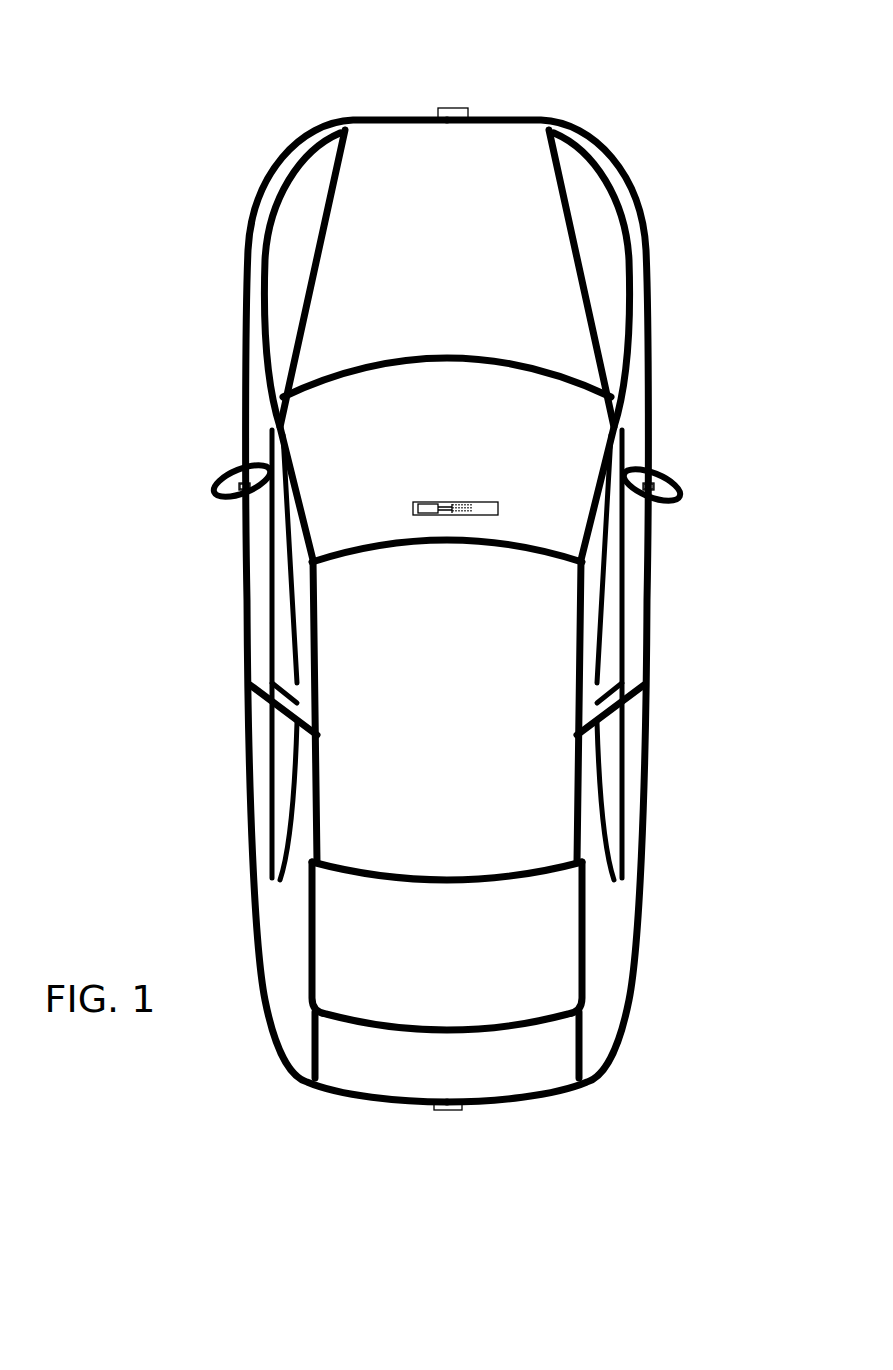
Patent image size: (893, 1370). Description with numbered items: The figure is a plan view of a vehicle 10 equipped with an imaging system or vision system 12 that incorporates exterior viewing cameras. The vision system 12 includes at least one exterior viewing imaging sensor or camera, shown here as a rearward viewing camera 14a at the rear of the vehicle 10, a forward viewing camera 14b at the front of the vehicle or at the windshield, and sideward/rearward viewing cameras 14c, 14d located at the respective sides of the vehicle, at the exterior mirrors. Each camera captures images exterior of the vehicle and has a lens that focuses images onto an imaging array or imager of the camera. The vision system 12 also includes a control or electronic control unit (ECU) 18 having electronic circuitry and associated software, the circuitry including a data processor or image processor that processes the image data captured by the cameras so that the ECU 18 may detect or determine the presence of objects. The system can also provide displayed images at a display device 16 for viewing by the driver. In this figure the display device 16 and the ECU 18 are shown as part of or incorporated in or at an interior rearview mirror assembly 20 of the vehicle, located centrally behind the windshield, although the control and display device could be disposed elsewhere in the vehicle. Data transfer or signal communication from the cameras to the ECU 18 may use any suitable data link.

The vehicle 10 is at (198, 212).
The vision system 12 is at (397, 1132).
The rearward viewing camera 14a is at (452, 1111).
The forward viewing camera 14b is at (457, 108).
The sideward/rearward viewing camera 14c is at (237, 487).
The sideward/rearward viewing camera 14d is at (652, 484).
The display device 16 is at (430, 505).
The electronic control unit (ECU) 18 is at (452, 500).
The interior rearview mirror assembly 20 is at (498, 503).